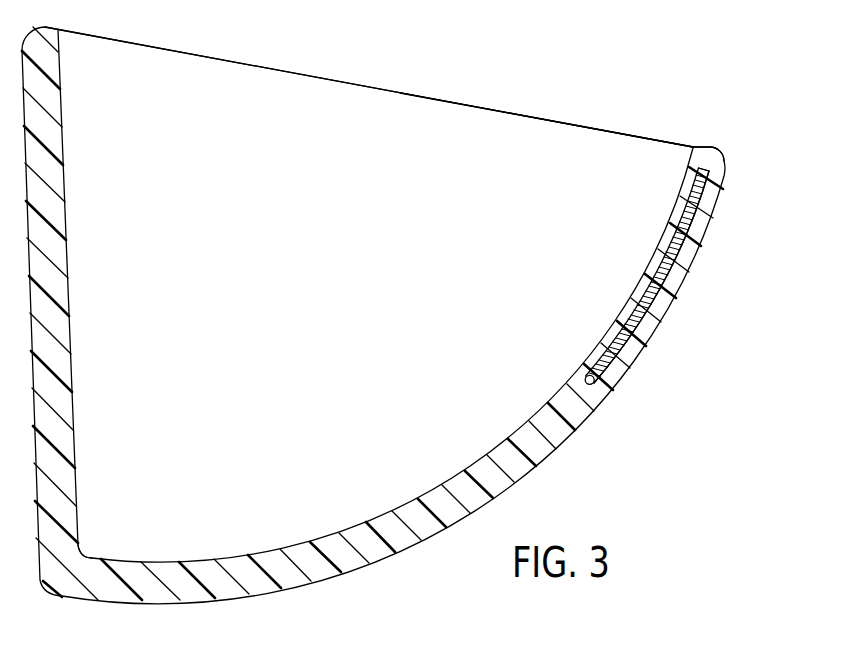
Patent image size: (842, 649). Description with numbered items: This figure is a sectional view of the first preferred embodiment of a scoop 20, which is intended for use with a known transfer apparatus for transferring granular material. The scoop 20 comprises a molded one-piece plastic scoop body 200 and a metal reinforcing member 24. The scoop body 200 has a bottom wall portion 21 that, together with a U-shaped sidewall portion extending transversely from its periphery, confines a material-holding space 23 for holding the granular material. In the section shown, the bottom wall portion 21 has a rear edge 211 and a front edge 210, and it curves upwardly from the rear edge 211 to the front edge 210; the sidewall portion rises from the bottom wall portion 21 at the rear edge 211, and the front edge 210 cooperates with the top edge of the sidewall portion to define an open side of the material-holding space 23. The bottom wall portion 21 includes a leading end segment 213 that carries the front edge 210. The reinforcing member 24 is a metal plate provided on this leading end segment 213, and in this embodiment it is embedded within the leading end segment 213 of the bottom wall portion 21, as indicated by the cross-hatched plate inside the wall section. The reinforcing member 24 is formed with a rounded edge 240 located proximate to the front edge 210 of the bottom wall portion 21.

The scoop 20 is at (721, 143).
The bottom wall portion 21 is at (577, 423).
The rear edge 211 is at (68, 573).
The leading end segment 213 is at (640, 332).
The material-holding space 23 is at (490, 127).
The scoop body 200 is at (577, 115).
The front edge 210 is at (707, 155).
The reinforcing member 24 is at (676, 286).
The rounded edge 240 is at (710, 166).